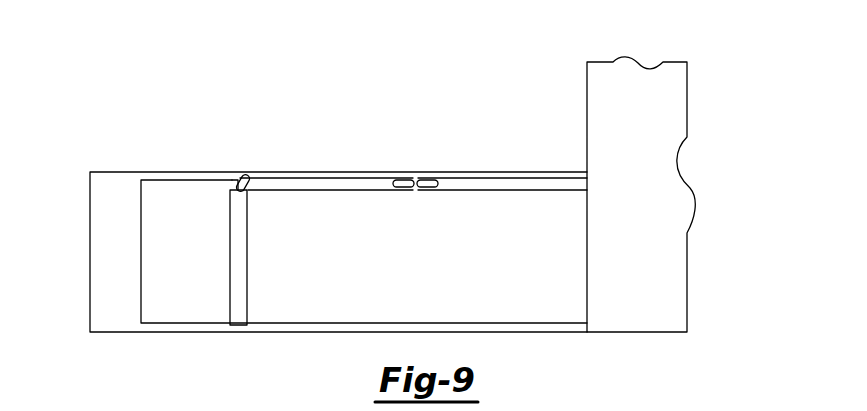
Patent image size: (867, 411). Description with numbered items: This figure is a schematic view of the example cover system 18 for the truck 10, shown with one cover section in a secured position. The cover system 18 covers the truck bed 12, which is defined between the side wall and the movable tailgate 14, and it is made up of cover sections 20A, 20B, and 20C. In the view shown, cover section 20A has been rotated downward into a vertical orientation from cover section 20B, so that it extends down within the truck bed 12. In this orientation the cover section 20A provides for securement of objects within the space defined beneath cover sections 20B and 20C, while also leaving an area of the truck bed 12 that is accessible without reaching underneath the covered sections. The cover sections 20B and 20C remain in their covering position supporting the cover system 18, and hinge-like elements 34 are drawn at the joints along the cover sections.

The vehicle body / support structure 10 is at (633, 48).
The hinge assembly 12 is at (222, 156).
The housing 14 is at (90, 250).
The folding panel assembly 18 is at (413, 153).
The first panel section 20A is at (247, 270).
The second panel section 20B is at (300, 190).
The third panel section 20C is at (533, 190).
The hinge pin 34 is at (239, 181).